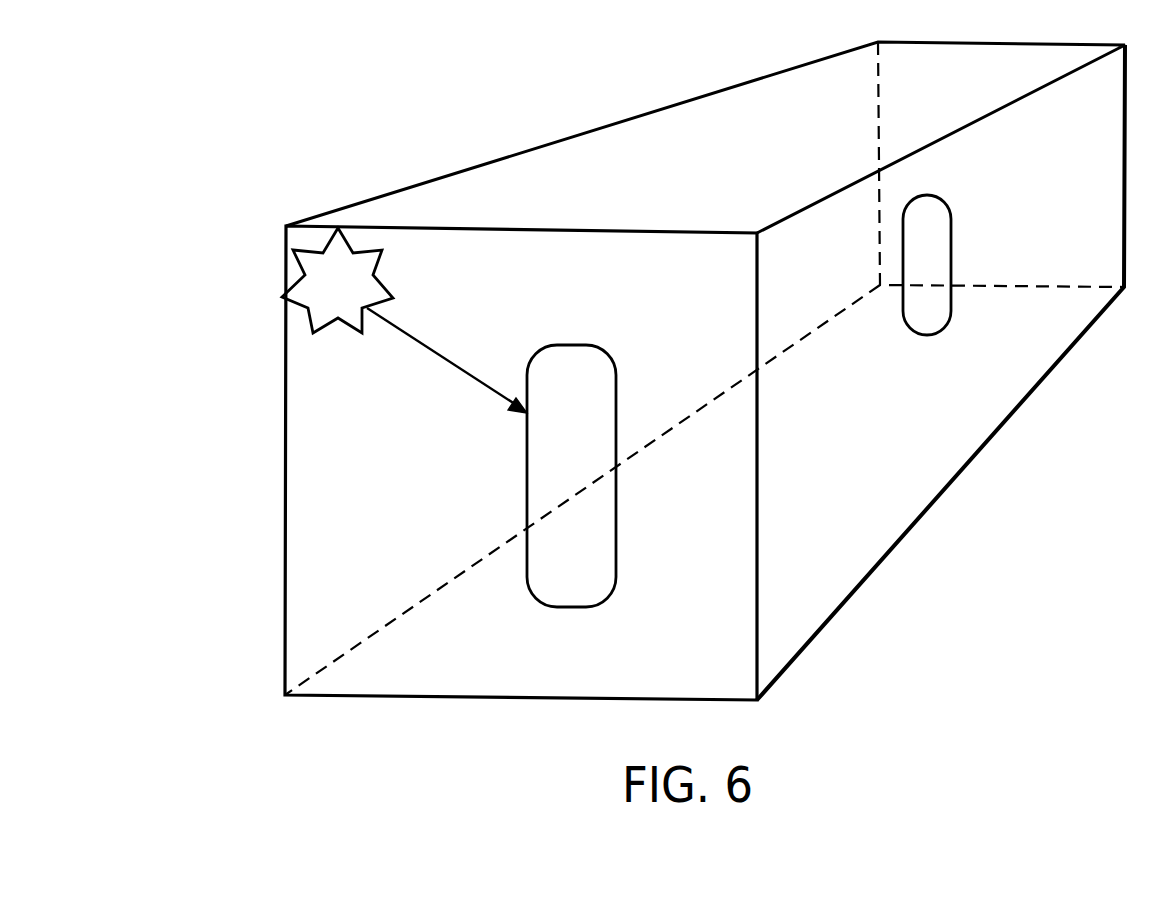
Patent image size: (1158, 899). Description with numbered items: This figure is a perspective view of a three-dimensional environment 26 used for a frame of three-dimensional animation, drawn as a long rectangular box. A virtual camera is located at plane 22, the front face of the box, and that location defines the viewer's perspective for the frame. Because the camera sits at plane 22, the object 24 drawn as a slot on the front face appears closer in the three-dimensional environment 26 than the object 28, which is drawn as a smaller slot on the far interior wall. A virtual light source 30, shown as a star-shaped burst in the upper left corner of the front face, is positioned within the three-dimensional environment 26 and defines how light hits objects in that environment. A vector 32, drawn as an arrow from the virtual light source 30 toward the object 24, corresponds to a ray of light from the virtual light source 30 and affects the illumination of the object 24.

The plane 22 is at (323, 477).
The object 24 is at (571, 357).
The 3D environment 26 is at (577, 100).
The object 28 is at (930, 213).
The virtual light source 30 is at (364, 272).
The vector 32 is at (421, 347).